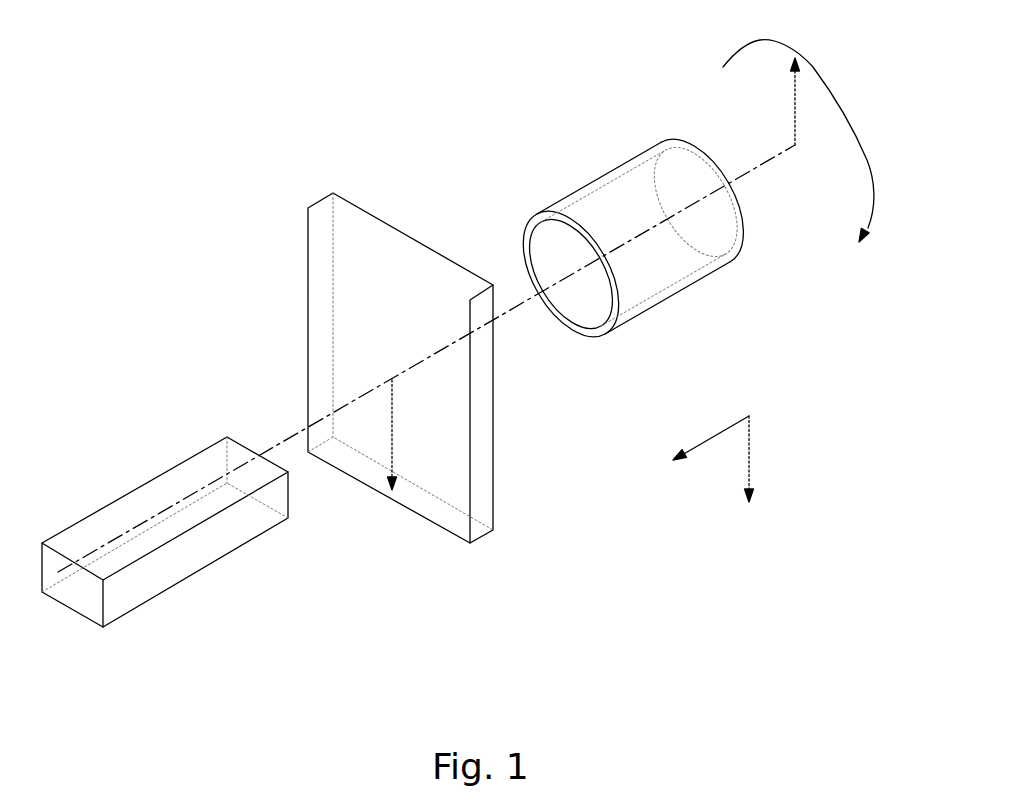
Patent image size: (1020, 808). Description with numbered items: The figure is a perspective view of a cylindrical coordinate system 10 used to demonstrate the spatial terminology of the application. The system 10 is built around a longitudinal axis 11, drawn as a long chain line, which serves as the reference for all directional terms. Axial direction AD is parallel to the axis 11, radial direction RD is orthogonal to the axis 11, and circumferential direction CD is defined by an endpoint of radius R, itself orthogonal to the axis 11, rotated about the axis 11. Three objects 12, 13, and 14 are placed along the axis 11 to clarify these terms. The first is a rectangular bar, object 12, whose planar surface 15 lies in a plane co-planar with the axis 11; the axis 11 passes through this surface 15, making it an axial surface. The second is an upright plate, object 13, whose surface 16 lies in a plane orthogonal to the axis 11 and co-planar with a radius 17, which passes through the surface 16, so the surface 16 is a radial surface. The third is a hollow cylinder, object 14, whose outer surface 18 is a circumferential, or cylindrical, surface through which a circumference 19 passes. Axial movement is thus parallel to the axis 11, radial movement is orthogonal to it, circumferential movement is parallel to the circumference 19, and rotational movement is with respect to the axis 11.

The cylindrical coordinate system 10 is at (252, 239).
The longitudinal axis 11 is at (733, 183).
The object 12 is at (130, 613).
The object 13 is at (511, 538).
The object 14 is at (666, 315).
The axial surface 15 is at (127, 513).
The radial surface 16 is at (325, 327).
The radius 17 is at (392, 433).
The circumferential surface 18 is at (598, 178).
The circumference 19 is at (520, 237).
The radius R is at (795, 97).
The circumferential direction CD is at (833, 87).
The axial direction AD is at (710, 435).
The radial direction RD is at (750, 455).